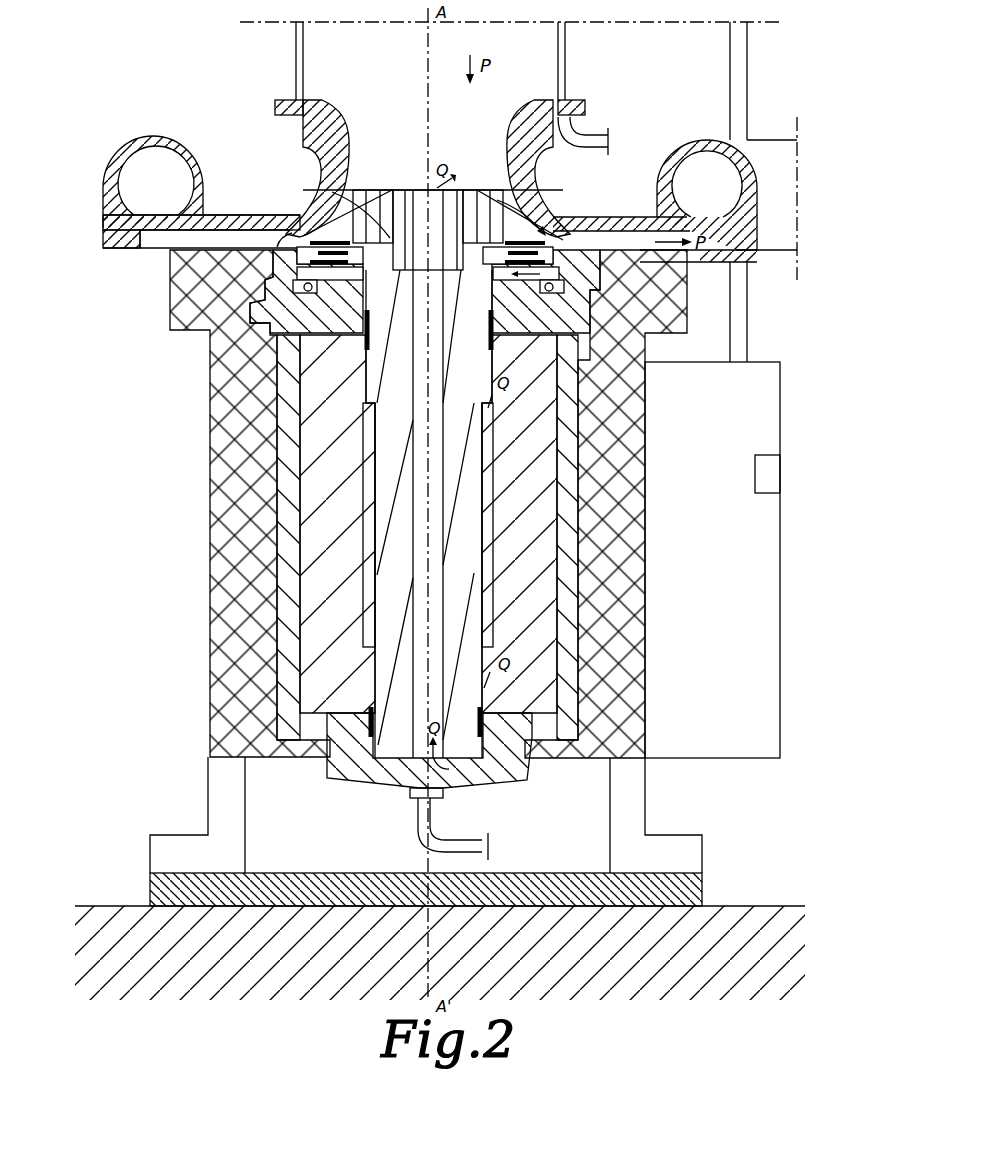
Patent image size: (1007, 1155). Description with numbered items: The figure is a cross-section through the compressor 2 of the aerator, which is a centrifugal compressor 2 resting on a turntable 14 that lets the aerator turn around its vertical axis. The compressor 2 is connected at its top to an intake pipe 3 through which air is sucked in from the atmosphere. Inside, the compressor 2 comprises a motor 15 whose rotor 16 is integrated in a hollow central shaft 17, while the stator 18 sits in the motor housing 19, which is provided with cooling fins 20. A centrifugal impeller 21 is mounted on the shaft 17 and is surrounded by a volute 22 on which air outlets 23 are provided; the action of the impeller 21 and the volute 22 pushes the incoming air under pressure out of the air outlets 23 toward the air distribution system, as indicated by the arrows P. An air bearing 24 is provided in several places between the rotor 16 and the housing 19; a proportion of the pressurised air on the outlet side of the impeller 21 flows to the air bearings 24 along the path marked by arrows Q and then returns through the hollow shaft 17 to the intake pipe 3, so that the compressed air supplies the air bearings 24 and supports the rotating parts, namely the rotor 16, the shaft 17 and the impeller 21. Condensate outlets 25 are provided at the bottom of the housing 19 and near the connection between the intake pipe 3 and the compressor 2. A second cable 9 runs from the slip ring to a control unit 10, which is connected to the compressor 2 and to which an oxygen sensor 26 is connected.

The compressor 2 is at (142, 86).
The intake pipe 3 is at (566, 66).
The second cable 9 is at (740, 70).
The control unit 10 is at (758, 383).
The turntable 14 is at (703, 892).
The motor 15 is at (150, 578).
The rotor 16 is at (370, 520).
The hollow central shaft 17 is at (370, 677).
The stator 18 is at (318, 647).
The motor housing 19 is at (290, 440).
The cooling fins 20 is at (233, 375).
The centrifugal impeller 21 is at (320, 233).
The volute 22 is at (218, 167).
The air outlets 23 is at (700, 197).
The air bearing 24 is at (360, 343).
The condensate outlets 25 is at (585, 135).
The oxygen sensor 26 is at (768, 463).